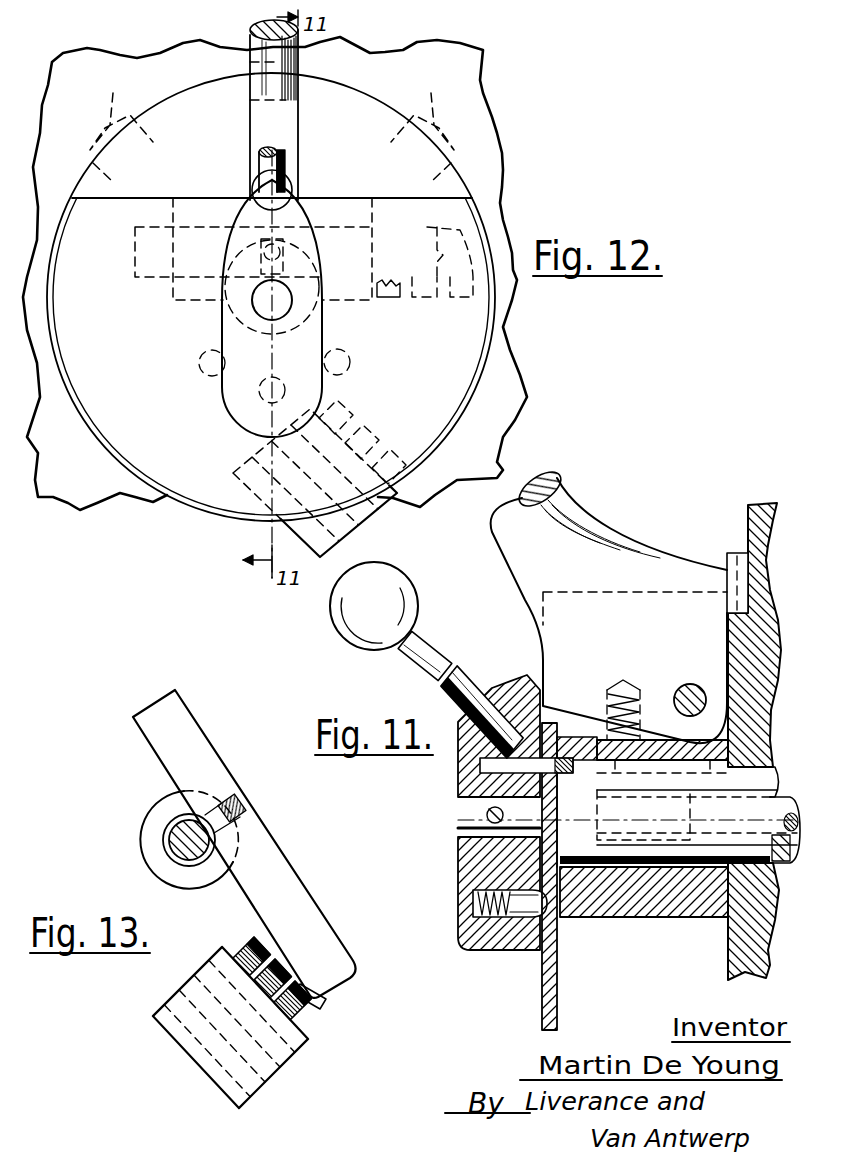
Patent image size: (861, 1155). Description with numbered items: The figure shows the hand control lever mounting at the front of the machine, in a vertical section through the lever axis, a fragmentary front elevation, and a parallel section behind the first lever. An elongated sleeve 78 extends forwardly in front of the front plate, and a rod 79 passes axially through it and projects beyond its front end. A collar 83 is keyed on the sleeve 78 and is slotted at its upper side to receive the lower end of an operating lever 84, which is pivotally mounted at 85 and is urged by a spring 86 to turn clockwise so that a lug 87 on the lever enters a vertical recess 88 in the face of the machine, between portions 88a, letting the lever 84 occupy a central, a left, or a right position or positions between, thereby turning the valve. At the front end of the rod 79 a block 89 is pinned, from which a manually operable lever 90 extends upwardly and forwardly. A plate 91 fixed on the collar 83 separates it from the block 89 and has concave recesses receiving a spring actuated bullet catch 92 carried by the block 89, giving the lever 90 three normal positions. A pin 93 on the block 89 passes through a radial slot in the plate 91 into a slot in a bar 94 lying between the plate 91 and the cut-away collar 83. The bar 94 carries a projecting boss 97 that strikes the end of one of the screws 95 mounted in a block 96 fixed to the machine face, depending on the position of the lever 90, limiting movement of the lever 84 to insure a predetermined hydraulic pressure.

In FIG. 11, the elongated sleeve 78 is at (685, 873).
In FIG. 13, the elongated sleeve 78 is at (155, 863).
In FIG. 12, the rod 79 is at (283, 303).
In FIG. 11, the rod 79 is at (577, 838).
In FIG. 13, the rod 79 is at (168, 840).
In FIG. 12, the collar 83 is at (355, 105).
In FIG. 11, the collar 83 is at (633, 912).
In FIG. 12, the operating lever 84 is at (300, 72).
In FIG. 11, the operating lever 84 is at (587, 533).
In FIG. 11, the pivot 85 is at (690, 684).
In FIG. 11, the spring 86 is at (610, 712).
In FIG. 12, the lug 87 is at (250, 62).
In FIG. 11, the lug 87 is at (728, 582).
In FIG. 11, the vertical recess 88 is at (728, 553).
In FIG. 12, the portions 88a is at (285, 128).
In FIG. 12, the block 89 is at (302, 218).
In FIG. 11, the block 89 is at (462, 872).
In FIG. 12, the manually operable lever 90 is at (285, 165).
In FIG. 11, the manually operable lever 90 is at (418, 660).
In FIG. 12, the plate 91 is at (205, 490).
In FIG. 11, the plate 91 is at (545, 972).
In FIG. 11, the spring actuated bullet catch 92 is at (482, 950).
In FIG. 12, the pin 93 is at (262, 250).
In FIG. 11, the pin 93 is at (490, 760).
In FIG. 13, the pin 93 is at (242, 806).
In FIG. 12, the bar 94 is at (388, 237).
In FIG. 11, the bar 94 is at (577, 737).
In FIG. 13, the bar 94 is at (265, 845).
In FIG. 12, the screws 95 is at (352, 400).
In FIG. 13, the screws 95 is at (258, 938).
In FIG. 13, the block 96 is at (202, 1050).
In FIG. 12, the projecting boss 97 is at (450, 295).
In FIG. 13, the projecting boss 97 is at (322, 1004).